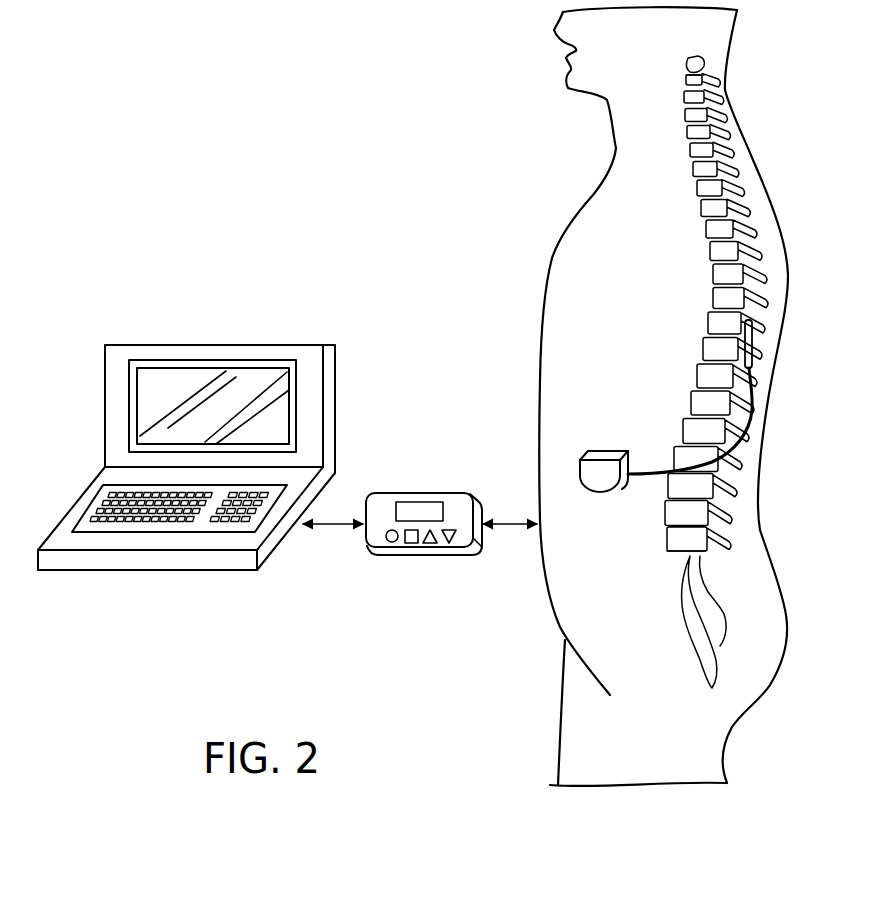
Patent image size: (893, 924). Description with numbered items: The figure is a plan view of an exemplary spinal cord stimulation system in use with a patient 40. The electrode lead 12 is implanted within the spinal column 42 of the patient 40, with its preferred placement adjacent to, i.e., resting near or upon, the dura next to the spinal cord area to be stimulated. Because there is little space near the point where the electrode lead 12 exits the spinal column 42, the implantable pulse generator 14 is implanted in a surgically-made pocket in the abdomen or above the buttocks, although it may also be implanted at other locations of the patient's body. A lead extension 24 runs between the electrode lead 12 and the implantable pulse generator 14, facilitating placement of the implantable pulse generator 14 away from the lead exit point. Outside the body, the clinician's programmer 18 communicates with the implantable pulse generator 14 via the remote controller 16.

The implantable stimulation lead 12 is at (762, 348).
The implantable pulse generator 14 is at (604, 480).
The remote controller 16 is at (444, 461).
The clinician's programmer 18 is at (197, 342).
The lead extension 24 is at (748, 422).
The patient 40 is at (552, 258).
The spinal column 42 is at (707, 320).